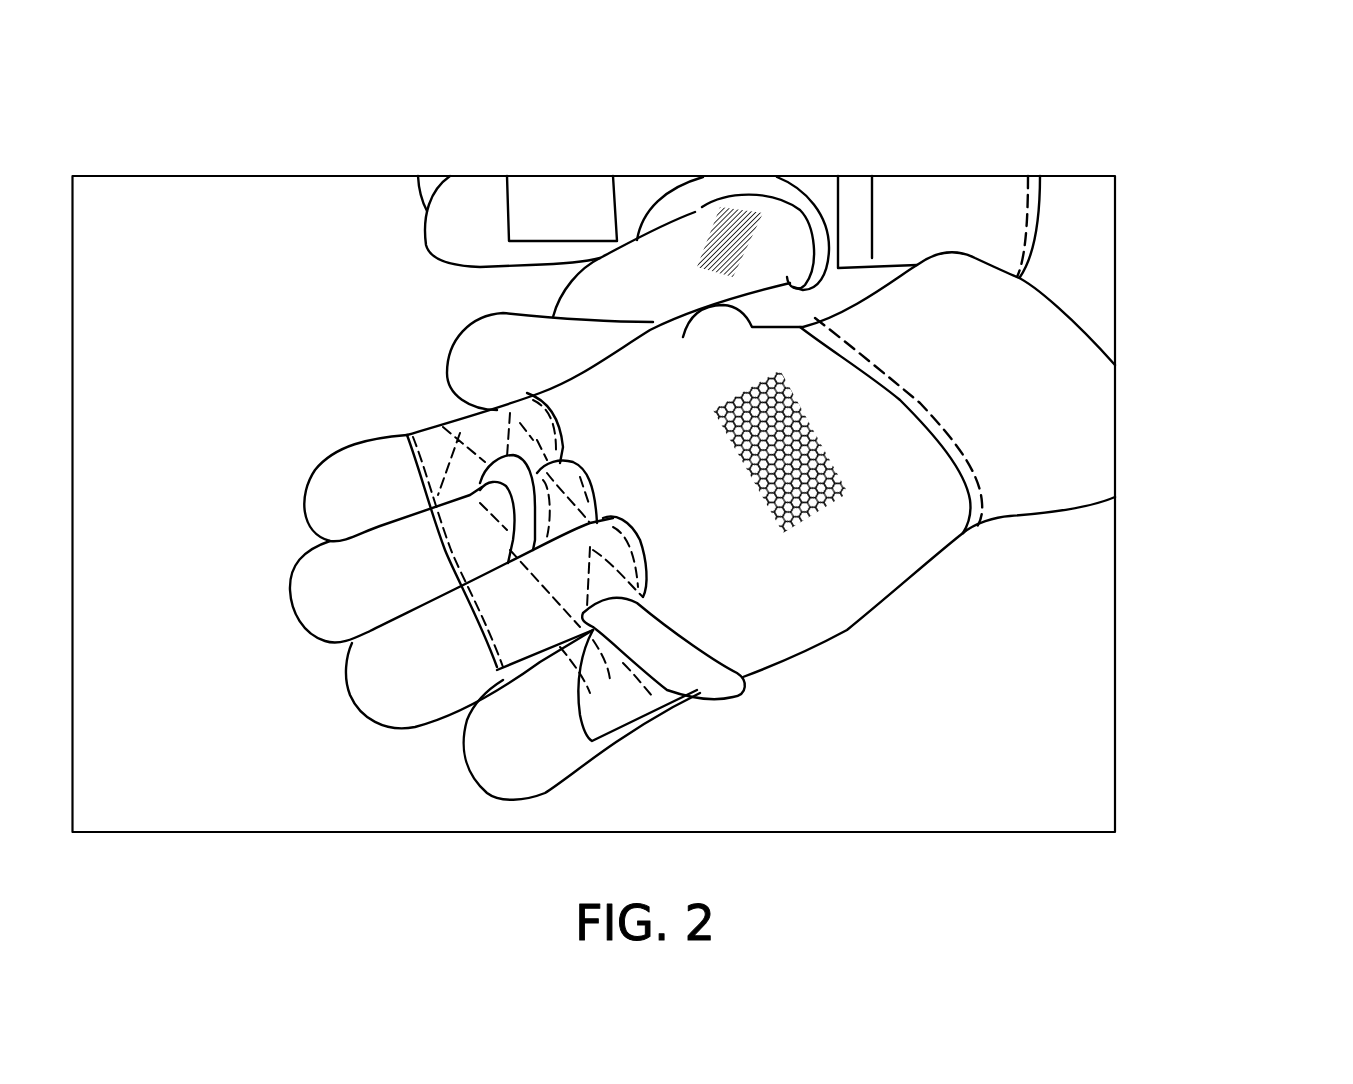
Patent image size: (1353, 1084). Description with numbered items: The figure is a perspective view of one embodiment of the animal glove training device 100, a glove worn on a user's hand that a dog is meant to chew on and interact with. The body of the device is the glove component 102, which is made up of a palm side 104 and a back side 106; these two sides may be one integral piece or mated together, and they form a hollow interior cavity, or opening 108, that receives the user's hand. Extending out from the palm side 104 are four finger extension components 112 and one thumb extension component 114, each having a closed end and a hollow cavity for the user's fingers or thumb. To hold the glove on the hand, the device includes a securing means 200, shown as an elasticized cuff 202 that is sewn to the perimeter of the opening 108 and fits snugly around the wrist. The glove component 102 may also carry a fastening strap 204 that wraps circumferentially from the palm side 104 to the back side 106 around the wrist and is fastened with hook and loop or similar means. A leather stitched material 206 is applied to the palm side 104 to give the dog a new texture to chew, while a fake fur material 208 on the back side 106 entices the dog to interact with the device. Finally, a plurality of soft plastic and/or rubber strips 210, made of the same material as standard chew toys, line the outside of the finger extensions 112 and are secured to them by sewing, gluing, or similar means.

The animal glove training device 100 is at (1090, 218).
The glove component 102 is at (869, 643).
The palm side 104 is at (680, 443).
The back side 106 is at (655, 195).
The opening 108 is at (1068, 325).
The finger extension components 112 is at (515, 743).
The thumb extension component 114 is at (470, 352).
The securing means 200 is at (1108, 522).
The elasticized cuff 202 is at (1062, 410).
The fastening strap 204 is at (852, 208).
The leather stitched material 206 is at (780, 483).
The fake fur material 208 is at (733, 222).
The soft plastic and/or rubber strips 210 is at (613, 682).